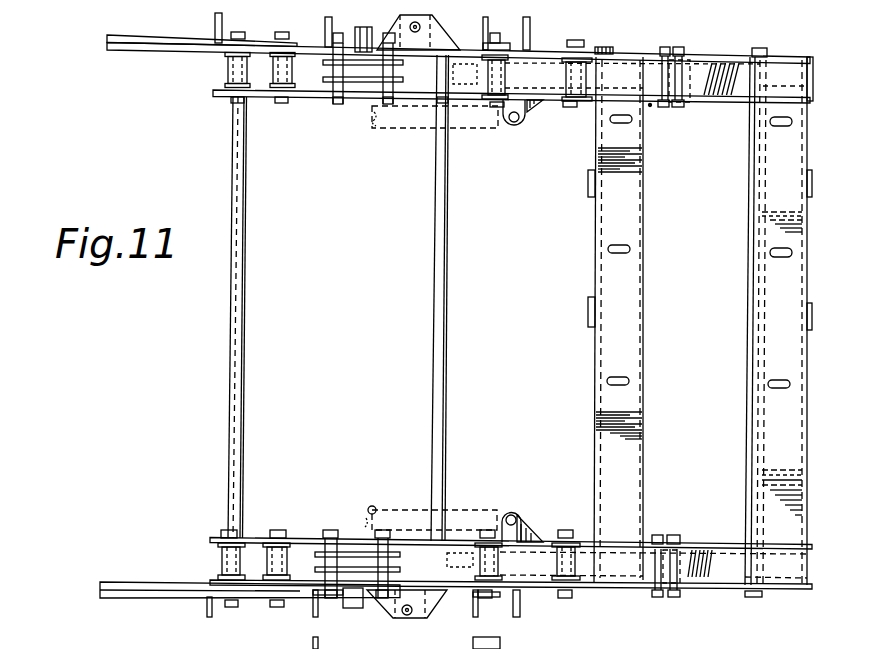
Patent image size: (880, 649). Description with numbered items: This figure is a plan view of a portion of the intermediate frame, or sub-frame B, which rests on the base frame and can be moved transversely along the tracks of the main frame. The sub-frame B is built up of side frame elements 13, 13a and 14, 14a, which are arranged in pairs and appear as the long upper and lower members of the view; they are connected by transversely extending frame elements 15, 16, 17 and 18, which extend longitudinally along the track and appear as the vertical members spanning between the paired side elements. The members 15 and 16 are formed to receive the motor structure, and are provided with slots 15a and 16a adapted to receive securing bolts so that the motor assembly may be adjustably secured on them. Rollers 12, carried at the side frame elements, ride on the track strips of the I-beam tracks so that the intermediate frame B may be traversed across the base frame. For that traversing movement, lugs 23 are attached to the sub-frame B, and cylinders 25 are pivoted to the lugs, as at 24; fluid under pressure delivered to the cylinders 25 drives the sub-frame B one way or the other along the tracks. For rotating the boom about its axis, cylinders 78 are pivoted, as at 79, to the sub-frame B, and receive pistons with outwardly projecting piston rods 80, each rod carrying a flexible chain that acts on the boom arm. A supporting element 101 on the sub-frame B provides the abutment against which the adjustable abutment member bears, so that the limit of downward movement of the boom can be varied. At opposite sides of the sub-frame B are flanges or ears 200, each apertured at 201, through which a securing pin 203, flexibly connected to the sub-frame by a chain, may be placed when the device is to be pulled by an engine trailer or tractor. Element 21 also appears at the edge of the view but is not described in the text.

The supporting element 101 is at (130, 41).
The rollers 12 is at (228, 71).
The side frame element 13 is at (308, 48).
The side frame element 13a is at (318, 98).
The side frame element 14 is at (641, 590).
The side frame element 14a is at (690, 543).
The transversely extending frame element 15 is at (762, 447).
The slot 15a is at (772, 253).
The transversely extending frame element 16 is at (594, 423).
The slot 16a is at (631, 248).
The transversely extending frame element 17 is at (442, 370).
The transversely extending frame element 18 is at (240, 380).
The support 21 is at (386, 643).
The lug 23 is at (528, 108).
The pivot 24 is at (512, 123).
The cylinder 25 is at (412, 127).
The cylinder 78 is at (478, 105).
The pivot 79 is at (676, 101).
The piston rod 80 is at (453, 73).
The flange or ear 200 is at (432, 47).
The aperture 201 is at (400, 620).
The securing pin 203 is at (409, 30).
The intermediate frame B is at (729, 596).